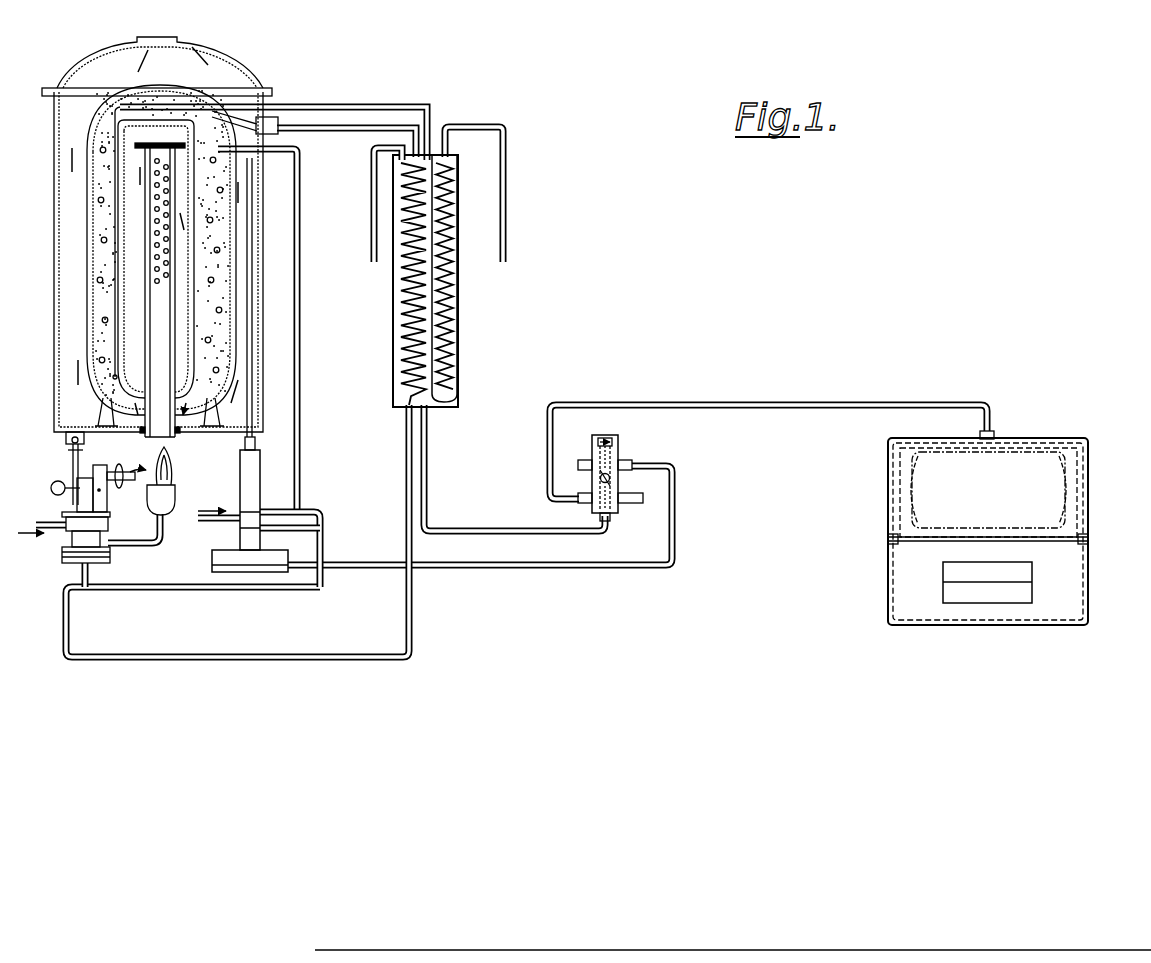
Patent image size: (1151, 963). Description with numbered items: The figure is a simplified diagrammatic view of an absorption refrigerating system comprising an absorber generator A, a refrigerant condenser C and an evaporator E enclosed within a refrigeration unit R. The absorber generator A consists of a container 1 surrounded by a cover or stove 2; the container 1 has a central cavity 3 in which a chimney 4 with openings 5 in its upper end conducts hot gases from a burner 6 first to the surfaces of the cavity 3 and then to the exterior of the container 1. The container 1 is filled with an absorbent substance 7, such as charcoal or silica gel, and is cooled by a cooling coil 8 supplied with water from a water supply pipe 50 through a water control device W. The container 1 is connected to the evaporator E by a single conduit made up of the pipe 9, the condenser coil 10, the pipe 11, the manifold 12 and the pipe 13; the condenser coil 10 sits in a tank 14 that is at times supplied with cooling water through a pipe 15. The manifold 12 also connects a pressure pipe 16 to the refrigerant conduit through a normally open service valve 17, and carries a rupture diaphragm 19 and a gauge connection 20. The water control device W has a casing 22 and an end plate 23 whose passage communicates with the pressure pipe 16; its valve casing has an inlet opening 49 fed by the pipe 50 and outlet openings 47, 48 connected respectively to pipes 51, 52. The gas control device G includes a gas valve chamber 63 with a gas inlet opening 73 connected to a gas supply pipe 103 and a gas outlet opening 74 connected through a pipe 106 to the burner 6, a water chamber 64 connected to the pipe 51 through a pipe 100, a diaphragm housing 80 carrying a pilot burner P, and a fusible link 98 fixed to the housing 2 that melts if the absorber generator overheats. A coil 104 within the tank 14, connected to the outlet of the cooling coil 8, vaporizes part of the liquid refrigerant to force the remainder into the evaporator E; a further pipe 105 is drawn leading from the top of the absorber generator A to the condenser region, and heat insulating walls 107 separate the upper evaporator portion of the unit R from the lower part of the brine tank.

The container 1 is at (88, 252).
The cover or stove 2 is at (57, 290).
The central cavity 3 is at (184, 345).
The chimney 4 is at (158, 377).
The openings 5 is at (173, 267).
The burner 6 is at (176, 493).
The absorbent substance 7 is at (96, 305).
The cooling coil 8 is at (216, 300).
The pipe 9 is at (352, 130).
The condenser coil 10 is at (403, 323).
The pipe 11 is at (467, 528).
The manifold 12 is at (621, 481).
The pipe 13 is at (740, 403).
The tank 14 is at (459, 329).
The pipe 15 is at (406, 472).
The pressure pipe 16 is at (634, 566).
The service valve 17 is at (592, 481).
The rupture diaphragm 19 is at (635, 503).
The gauge connection 20 is at (586, 461).
The casing 22 is at (218, 556).
The end plate 23 is at (260, 567).
The outlet opening 47 is at (263, 507).
The outlet opening 48 is at (262, 534).
The inlet opening 49 is at (239, 516).
The water supply pipe 50 is at (222, 522).
The pipe 51 is at (309, 512).
The pipe 52 is at (320, 528).
The gas valve chamber 63 is at (107, 523).
The water chamber 64 is at (62, 563).
The gas inlet opening 73 is at (63, 533).
The gas outlet opening 74 is at (108, 545).
The diaphragm housing 80 is at (119, 468).
The fusible link 98 is at (67, 455).
The pipe 100 is at (95, 577).
The gas supply pipe 103 is at (43, 522).
The coil 104 is at (456, 274).
The pipe 105 is at (388, 106).
The pipe 106 is at (144, 549).
The heat insulating walls 107 is at (1086, 538).
The absorber generator A is at (42, 183).
The refrigerant condenser C is at (392, 307).
The evaporator E is at (1054, 440).
The gas control device G is at (60, 469).
The pilot burner P is at (119, 502).
The refrigeration unit R is at (1096, 558).
The tube T is at (251, 378).
The water control device W is at (268, 481).